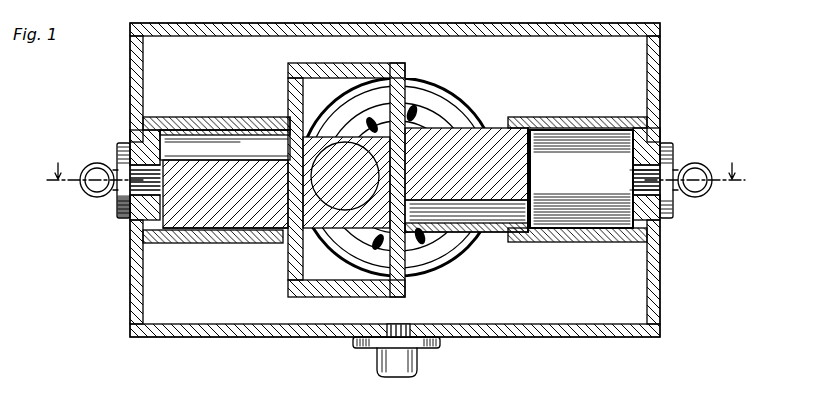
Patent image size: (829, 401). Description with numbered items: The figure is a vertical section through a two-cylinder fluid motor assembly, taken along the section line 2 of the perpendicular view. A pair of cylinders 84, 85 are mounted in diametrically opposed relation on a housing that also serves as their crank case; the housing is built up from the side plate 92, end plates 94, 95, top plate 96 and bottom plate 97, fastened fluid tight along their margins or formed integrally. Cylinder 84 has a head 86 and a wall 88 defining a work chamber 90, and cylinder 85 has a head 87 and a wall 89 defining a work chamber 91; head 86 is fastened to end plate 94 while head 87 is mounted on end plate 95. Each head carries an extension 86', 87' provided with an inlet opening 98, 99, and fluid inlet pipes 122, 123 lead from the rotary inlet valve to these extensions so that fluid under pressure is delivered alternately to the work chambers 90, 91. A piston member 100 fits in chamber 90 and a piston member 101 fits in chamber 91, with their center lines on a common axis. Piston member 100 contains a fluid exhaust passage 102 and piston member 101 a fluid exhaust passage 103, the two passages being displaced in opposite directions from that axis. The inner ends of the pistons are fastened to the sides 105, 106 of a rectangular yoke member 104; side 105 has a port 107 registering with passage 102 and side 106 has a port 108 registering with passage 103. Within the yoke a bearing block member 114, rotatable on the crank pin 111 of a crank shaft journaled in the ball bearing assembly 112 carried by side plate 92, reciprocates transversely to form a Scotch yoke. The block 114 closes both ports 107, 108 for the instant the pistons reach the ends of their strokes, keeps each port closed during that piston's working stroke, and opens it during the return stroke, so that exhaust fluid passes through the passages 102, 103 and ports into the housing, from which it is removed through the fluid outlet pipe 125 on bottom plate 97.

The section line 2- 2 is at (396, 161).
The cylinder 84 is at (210, 118).
The cylinder 85 is at (568, 118).
The cylinder head 86 is at (129, 193).
The extension of cylinder head 86' is at (111, 162).
The cylinder head 87 is at (667, 185).
The extension of cylinder head 87' is at (678, 164).
The cylinder wall 88 is at (205, 243).
The cylinder wall 89 is at (585, 243).
The work chamber 90 is at (253, 230).
The work chamber 91 is at (552, 229).
The side plate 92 is at (560, 38).
The end plate 94 is at (131, 72).
The end plate 95 is at (660, 68).
The top plate 96 is at (483, 28).
The bottom plate 97 is at (568, 325).
The inlet opening 98 is at (141, 192).
The inlet opening 99 is at (628, 190).
The piston member 100 is at (173, 175).
The piston member 101 is at (487, 133).
The fluid exhaust passage 102 is at (248, 140).
The fluid exhaust passage 103 is at (490, 224).
The yoke member 104 is at (333, 68).
The yoke side 105 is at (288, 258).
The yoke side 106 is at (405, 90).
The port 107 is at (284, 112).
The port 108 is at (407, 280).
The crank pin 111 is at (343, 170).
The ball bearing assembly 112 is at (418, 117).
The bearing block member 114 is at (316, 252).
The fluid inlet pipe 122 is at (87, 163).
The second fluid inlet pipe 123 is at (700, 163).
The fluid outlet pipe 125 is at (388, 358).